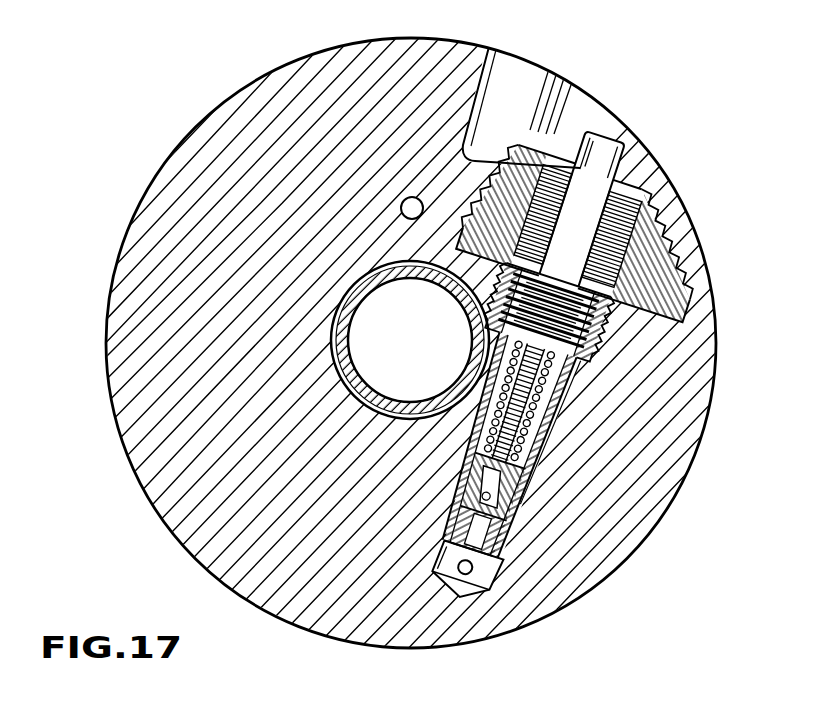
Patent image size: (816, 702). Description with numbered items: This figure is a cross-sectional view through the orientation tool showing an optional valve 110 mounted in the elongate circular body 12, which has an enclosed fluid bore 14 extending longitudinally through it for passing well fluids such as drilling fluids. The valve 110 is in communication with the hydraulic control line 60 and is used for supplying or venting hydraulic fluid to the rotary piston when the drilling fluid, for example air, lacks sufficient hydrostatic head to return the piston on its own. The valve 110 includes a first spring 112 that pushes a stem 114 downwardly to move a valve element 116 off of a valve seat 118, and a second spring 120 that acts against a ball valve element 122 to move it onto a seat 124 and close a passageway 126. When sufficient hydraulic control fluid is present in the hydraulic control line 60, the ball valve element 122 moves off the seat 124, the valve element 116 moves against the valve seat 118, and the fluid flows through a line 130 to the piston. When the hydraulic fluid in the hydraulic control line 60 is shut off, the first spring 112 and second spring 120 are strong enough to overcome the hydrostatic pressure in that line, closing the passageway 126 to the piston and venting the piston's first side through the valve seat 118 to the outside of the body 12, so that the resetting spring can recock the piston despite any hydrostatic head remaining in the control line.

The body 12 is at (162, 165).
The fluid bore 14 is at (375, 330).
The hydraulic control line 60 is at (490, 585).
The valve 110 is at (560, 437).
The first spring 112 is at (535, 232).
The stem 114 is at (603, 196).
The valve element 116 is at (597, 333).
The valve seat 118 is at (600, 337).
The second spring 120 is at (555, 447).
The ball valve element 122 is at (500, 540).
The seat 124 is at (530, 500).
The passageway 126 is at (478, 567).
The line 130 is at (580, 412).